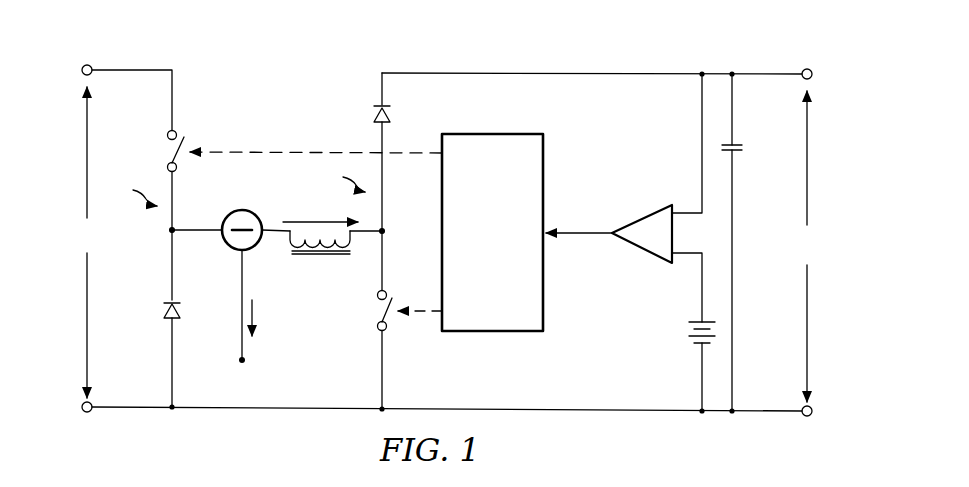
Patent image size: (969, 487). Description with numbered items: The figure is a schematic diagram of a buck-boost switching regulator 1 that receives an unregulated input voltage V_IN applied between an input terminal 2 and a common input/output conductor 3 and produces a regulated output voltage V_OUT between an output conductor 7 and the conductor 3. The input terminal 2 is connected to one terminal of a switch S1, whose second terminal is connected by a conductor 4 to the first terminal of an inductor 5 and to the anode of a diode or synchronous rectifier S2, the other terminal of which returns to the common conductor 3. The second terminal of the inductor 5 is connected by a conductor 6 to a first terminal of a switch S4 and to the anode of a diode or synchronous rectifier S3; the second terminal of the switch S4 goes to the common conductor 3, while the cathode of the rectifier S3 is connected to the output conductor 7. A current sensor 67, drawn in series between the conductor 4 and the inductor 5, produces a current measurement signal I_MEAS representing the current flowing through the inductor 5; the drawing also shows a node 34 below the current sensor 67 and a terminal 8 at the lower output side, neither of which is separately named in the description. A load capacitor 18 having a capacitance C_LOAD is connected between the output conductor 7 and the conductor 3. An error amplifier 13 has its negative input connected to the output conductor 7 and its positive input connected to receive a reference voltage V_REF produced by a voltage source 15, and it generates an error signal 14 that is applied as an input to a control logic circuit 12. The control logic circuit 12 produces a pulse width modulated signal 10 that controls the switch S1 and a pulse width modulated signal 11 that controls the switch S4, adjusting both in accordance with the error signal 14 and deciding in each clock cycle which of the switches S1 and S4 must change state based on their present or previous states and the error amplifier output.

The buck-boost switching regulator 1 is at (211, 50).
The input terminal 2 is at (82, 66).
The common input/output conductor 3 is at (82, 411).
The conductor 4 is at (168, 232).
The inductor 5 is at (322, 259).
The conductor 6 is at (386, 228).
The output conductor 7 is at (813, 70).
The negative output terminal 8 is at (813, 415).
The pulse width modulated signal 10 is at (263, 150).
The pulse width modulated signal 11 is at (436, 315).
The control logic circuit 12 is at (494, 133).
The error amplifier 13 is at (642, 252).
The error signal 14 is at (579, 241).
The voltage source 15 is at (698, 321).
The load capacitor 18 is at (738, 144).
The current measurement node 34 is at (239, 360).
The current sensor 67 is at (226, 216).
The switch S1 is at (170, 149).
The diode or synchronous rectifier S2 is at (166, 306).
The diode or synchronous rectifier S3 is at (374, 113).
The switch S4 is at (379, 312).